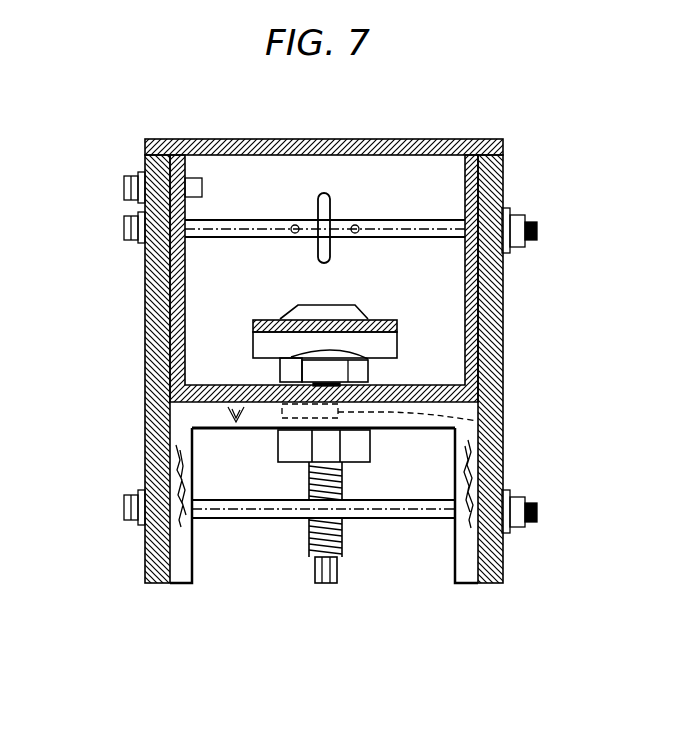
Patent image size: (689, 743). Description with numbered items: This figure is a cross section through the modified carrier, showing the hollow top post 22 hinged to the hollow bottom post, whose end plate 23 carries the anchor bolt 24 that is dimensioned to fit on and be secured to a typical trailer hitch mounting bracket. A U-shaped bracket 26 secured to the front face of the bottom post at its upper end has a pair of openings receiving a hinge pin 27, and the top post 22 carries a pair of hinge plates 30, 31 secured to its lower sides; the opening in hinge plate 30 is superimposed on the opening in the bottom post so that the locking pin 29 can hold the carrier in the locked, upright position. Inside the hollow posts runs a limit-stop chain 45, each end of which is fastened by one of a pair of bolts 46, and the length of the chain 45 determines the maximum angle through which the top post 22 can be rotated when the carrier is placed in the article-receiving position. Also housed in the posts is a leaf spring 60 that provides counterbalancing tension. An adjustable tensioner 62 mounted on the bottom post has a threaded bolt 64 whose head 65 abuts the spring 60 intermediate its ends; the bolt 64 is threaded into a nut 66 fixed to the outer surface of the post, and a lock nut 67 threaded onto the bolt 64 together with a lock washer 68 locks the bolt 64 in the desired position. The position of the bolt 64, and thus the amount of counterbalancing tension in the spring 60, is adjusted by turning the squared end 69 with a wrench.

The top post 22 is at (430, 140).
The end plate 23 is at (231, 287).
The anchor bolt 24 is at (300, 315).
The U-shaped bracket 26 is at (461, 545).
The hinge pin 27 is at (272, 520).
The locking pin 29 is at (125, 190).
The hinge plate 30 is at (150, 269).
The hinge plate 31 is at (500, 266).
The limit-stop chain 45 is at (331, 192).
The bolts 46 is at (125, 230).
The leaf spring 60 is at (362, 320).
The adjustable tensioner 62 is at (282, 383).
The threaded bolt 64 is at (343, 538).
The head 65 is at (368, 376).
The nut 66 is at (504, 418).
The lock nut 67 is at (331, 452).
The lock washer 68 is at (280, 431).
The squared end 69 is at (326, 585).